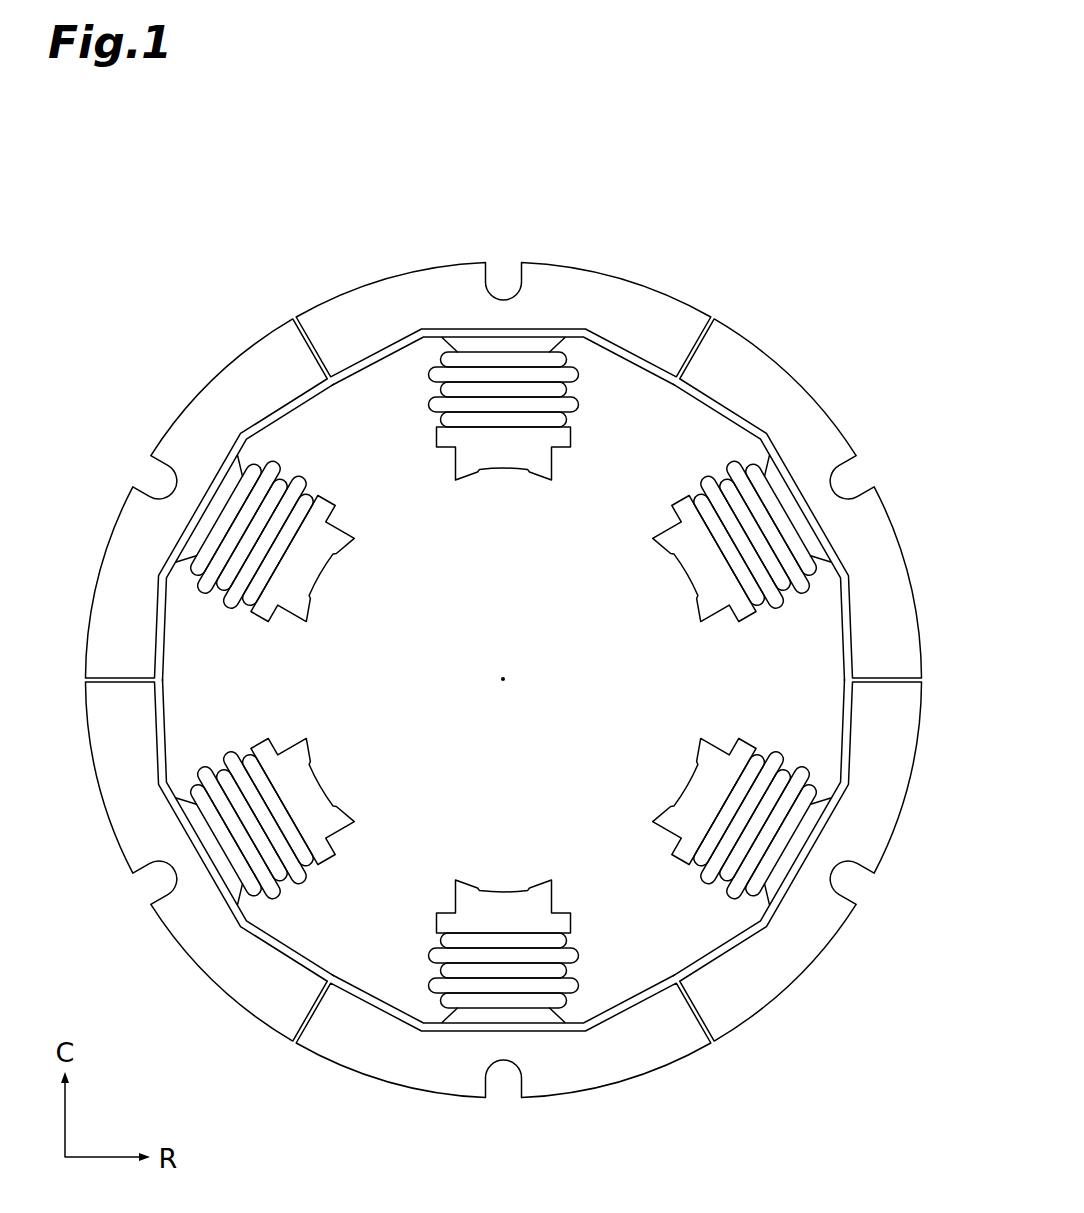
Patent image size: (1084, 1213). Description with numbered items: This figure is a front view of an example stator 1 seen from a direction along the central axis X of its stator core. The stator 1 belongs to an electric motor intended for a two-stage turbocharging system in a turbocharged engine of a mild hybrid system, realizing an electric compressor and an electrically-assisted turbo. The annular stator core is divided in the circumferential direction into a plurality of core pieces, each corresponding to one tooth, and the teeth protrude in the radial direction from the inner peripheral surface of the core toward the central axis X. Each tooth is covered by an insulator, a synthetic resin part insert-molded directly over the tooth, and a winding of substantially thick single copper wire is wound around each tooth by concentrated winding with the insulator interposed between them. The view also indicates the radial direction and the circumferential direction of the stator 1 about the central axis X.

The stator 1 is at (845, 156).
The central axis X is at (503, 678).